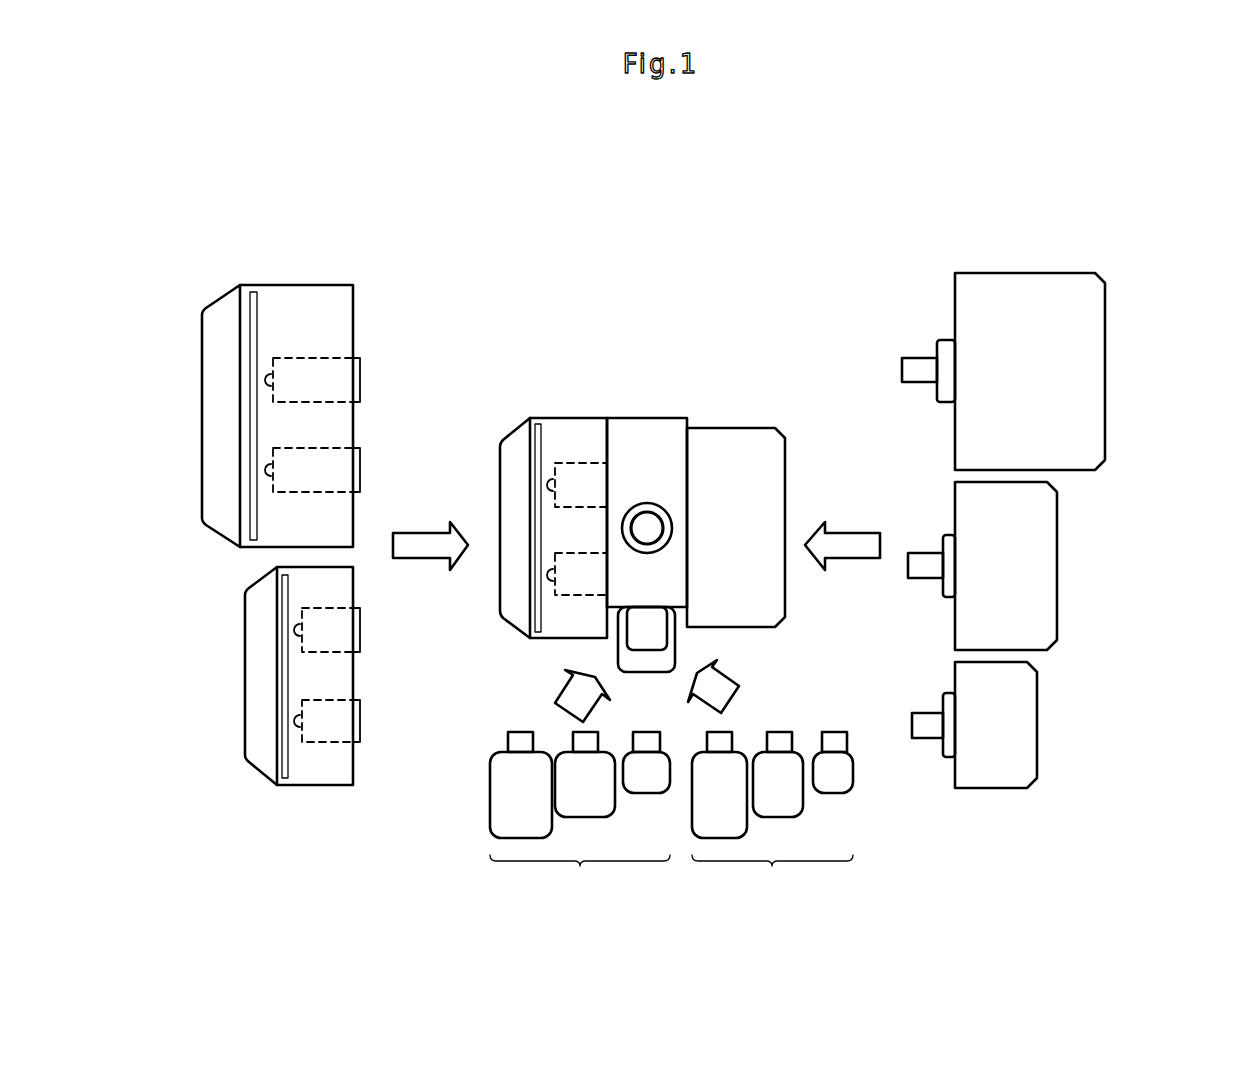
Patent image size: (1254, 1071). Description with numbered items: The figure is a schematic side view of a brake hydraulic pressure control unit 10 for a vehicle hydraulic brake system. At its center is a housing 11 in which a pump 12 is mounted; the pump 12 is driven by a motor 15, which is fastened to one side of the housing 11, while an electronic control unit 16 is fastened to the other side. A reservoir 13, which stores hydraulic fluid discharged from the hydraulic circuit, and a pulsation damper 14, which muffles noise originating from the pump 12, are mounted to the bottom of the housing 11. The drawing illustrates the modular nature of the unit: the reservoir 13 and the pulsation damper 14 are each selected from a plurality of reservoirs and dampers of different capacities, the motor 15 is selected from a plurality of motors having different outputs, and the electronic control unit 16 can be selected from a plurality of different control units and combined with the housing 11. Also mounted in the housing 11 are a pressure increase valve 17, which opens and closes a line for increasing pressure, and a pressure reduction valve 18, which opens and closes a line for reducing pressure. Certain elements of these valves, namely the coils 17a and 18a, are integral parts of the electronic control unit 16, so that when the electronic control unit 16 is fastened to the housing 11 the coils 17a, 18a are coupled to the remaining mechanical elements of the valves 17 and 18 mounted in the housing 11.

The brake hydraulic pressure control unit 10 is at (672, 435).
The housing 11 is at (680, 418).
The pump 12 is at (647, 520).
The reservoir 13 is at (646, 675).
The pulsation damper 14 is at (662, 635).
The motor 15 is at (760, 428).
The electronic control unit 16 is at (568, 418).
The pressure increase valve 17 is at (557, 470).
The coil 17a is at (275, 365).
The pressure reduction valve 18 is at (557, 588).
The coil 18a is at (275, 455).